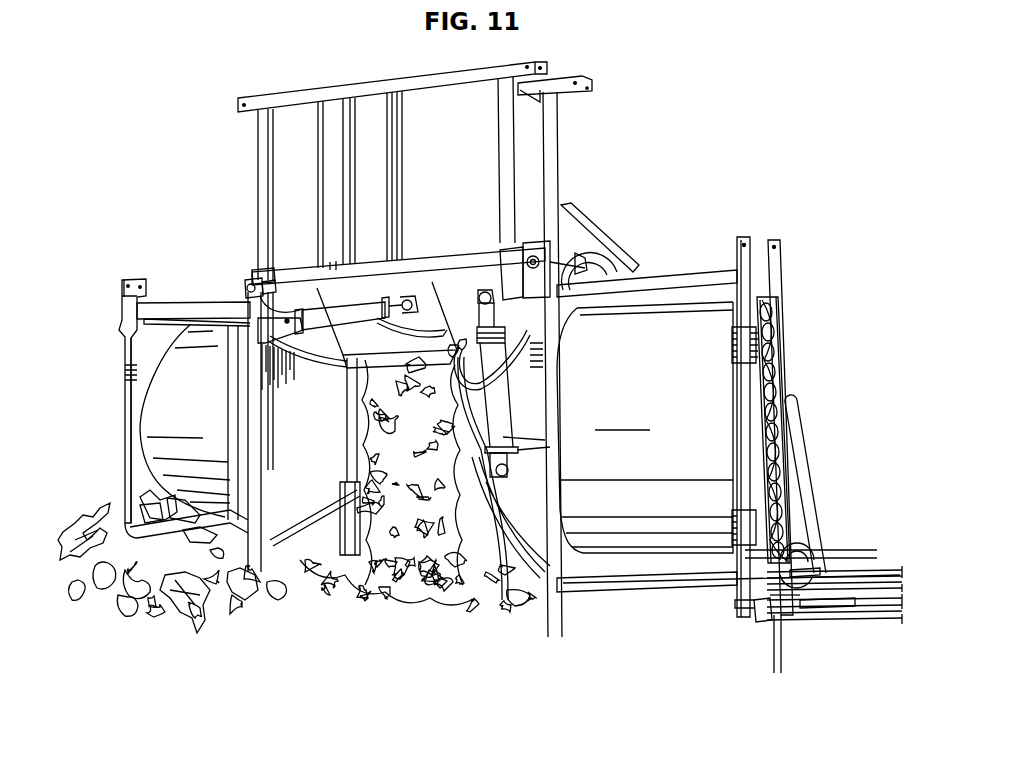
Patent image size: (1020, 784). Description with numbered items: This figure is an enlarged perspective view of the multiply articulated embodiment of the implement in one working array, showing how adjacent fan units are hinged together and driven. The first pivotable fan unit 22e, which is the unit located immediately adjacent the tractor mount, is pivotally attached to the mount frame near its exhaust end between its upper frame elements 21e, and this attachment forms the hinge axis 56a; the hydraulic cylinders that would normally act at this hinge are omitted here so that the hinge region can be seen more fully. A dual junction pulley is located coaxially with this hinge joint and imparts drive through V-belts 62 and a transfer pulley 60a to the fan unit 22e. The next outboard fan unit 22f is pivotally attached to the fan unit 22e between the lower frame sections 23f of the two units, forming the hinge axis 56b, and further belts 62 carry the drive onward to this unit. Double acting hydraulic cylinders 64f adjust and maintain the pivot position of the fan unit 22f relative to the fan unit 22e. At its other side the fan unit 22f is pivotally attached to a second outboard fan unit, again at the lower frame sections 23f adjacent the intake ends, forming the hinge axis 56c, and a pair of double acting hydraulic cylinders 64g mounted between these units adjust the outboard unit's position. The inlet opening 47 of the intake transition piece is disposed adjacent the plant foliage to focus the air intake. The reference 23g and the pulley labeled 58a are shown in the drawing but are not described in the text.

The next outboard fan unit 22f is at (338, 92).
The lower frame sections 23f is at (484, 276).
The inlet opening 47 is at (531, 243).
The hinge axis 56b is at (545, 262).
The hinge axis 56c is at (258, 280).
The double acting hydraulic cylinders 64g is at (248, 290).
The side frame member 23g is at (118, 478).
The first pivotable fan unit 22e is at (788, 293).
The transfer pulley 60a is at (786, 406).
The V-belts 62 is at (806, 455).
The drive pulley 58a is at (818, 547).
The hinge axis 56a is at (806, 568).
The upper frame elements 21e is at (745, 606).
The double acting hydraulic cylinders 64f is at (504, 590).